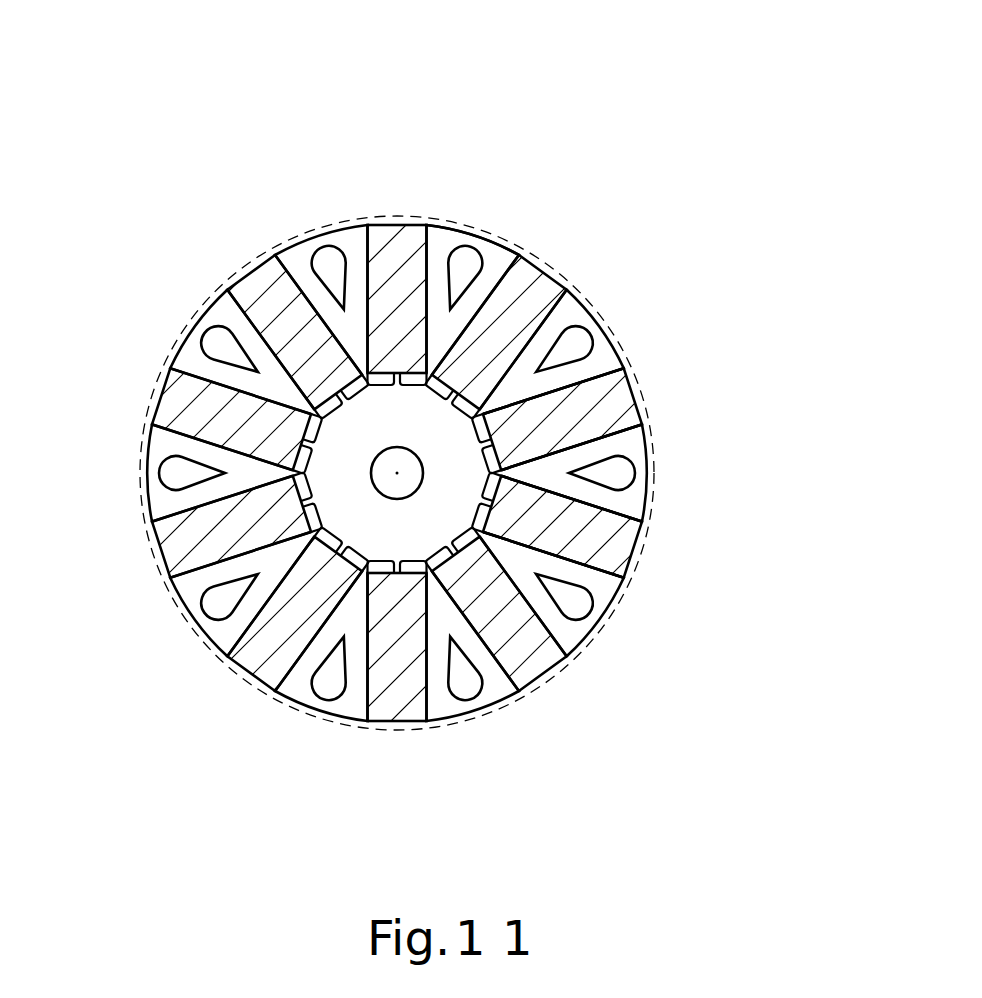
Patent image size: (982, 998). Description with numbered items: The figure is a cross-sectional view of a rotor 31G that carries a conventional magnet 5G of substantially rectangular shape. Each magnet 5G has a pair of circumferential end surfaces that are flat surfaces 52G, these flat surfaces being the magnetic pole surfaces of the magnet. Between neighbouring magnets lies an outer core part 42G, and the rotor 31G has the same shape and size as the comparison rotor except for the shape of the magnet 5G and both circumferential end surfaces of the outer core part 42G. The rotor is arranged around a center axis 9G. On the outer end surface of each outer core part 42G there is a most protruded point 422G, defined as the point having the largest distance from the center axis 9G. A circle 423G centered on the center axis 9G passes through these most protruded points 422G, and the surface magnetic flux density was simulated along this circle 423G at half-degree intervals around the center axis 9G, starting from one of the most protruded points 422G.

The rotor 31G is at (491, 396).
The magnet 5G is at (268, 663).
The center axis 9G is at (396, 473).
The outer core part 42G is at (603, 585).
The most protruded point 422G is at (475, 229).
The circle 423G is at (640, 388).
The flat surface 52G is at (602, 437).